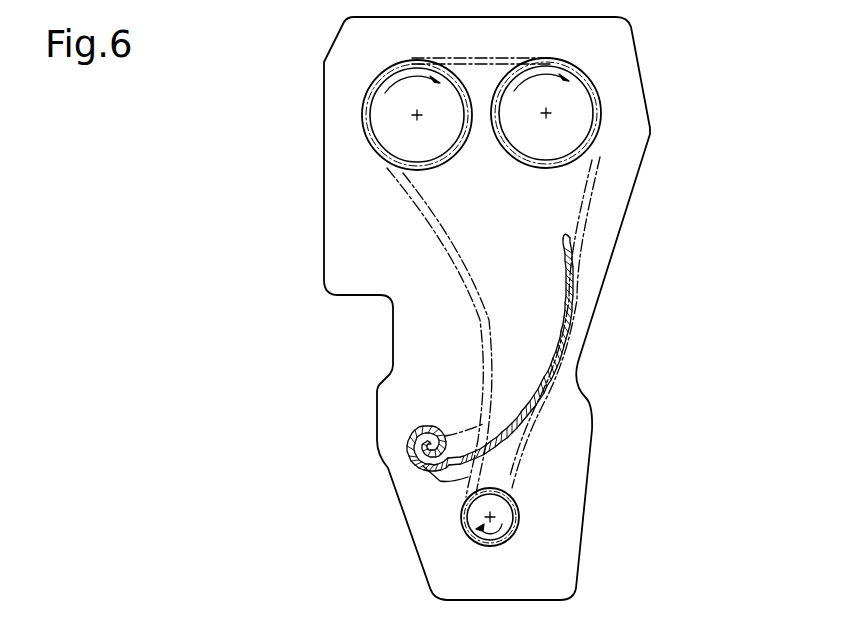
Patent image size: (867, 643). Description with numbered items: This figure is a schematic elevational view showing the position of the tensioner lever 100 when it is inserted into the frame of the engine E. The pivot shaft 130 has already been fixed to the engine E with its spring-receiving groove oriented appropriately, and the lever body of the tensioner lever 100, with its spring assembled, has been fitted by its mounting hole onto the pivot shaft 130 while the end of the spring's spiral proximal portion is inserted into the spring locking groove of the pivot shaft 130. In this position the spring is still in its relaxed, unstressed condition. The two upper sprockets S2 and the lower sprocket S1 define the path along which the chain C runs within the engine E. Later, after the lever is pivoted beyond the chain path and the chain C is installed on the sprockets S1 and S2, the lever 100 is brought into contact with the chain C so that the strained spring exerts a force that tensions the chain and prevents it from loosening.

The sprocket S2 is at (362, 113).
The sprocket S1 is at (505, 512).
The chain C is at (593, 205).
The tensioner lever 100 is at (550, 318).
The pivot shaft 130 is at (413, 458).
The engine E is at (377, 413).